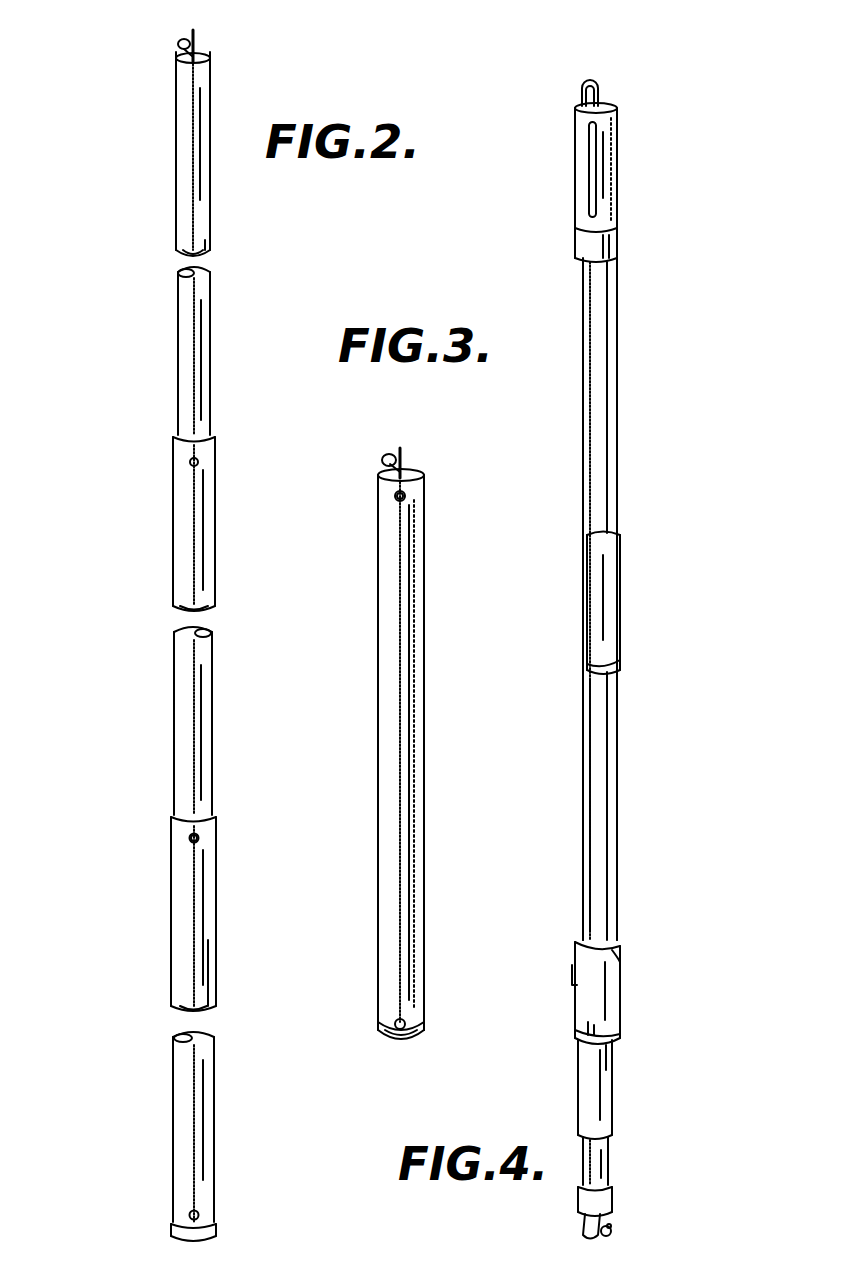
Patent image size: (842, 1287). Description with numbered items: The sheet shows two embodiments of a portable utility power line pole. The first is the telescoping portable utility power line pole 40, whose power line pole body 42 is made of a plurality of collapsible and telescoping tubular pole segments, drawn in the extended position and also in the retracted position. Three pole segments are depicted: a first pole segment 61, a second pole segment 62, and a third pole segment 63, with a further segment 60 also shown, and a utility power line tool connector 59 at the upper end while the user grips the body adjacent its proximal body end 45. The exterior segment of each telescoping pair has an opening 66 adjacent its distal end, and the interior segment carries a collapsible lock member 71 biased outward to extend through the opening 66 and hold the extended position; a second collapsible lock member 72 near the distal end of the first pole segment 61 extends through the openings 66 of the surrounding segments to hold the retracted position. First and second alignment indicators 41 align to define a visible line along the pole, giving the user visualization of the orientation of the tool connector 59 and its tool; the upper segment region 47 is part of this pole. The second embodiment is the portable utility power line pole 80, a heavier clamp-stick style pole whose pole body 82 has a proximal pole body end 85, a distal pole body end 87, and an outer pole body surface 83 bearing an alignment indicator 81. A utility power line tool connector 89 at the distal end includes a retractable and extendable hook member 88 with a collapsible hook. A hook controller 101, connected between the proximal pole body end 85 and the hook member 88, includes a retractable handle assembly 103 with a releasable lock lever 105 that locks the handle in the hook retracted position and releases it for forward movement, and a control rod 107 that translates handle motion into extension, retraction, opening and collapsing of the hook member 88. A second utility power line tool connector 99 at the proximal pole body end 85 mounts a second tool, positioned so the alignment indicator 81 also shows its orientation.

In FIG. 2, the portable utility power line pole 40 is at (105, 640).
In FIG. 3, the portable utility power line pole 40 is at (366, 745).
In FIG. 2, the alignment indicator 41 is at (190, 915).
In FIG. 2, the power line pole body 42 is at (191, 819).
In FIG. 2, the proximal body end 45 is at (232, 1168).
In FIG. 3, the proximal body end 45 is at (430, 1000).
In FIG. 2, the top pole section 47 is at (158, 158).
In FIG. 3, the top pole section 47 is at (434, 566).
In FIG. 2, the utility power line tool connector 59 is at (200, 50).
In FIG. 3, the utility power line tool connector 59 is at (408, 462).
In FIG. 2, the second pole section 60 is at (194, 439).
In FIG. 2, the first pole segment 61 is at (210, 240).
In FIG. 2, the second pole segment 62 is at (212, 664).
In FIG. 2, the third pole segment 63 is at (212, 972).
In FIG. 2, the opening 66 is at (189, 838).
In FIG. 3, the opening 66 is at (404, 498).
In FIG. 2, the collapsible lock member 71 is at (200, 838).
In FIG. 3, the collapsible lock member 71 is at (394, 1024).
In FIG. 3, the second collapsible lock member 72 is at (395, 498).
In FIG. 4, the portable utility power line pole 80 is at (646, 637).
In FIG. 4, the alignment indicator 81 is at (596, 801).
In FIG. 4, the pole body 82 is at (632, 727).
In FIG. 4, the outer pole body surface 83 is at (597, 813).
In FIG. 4, the proximal pole body end 85 is at (628, 1053).
In FIG. 4, the distal pool body end 87 is at (634, 190).
In FIG. 4, the retractable and extendable hook member 88 is at (612, 103).
In FIG. 4, the utility power line tool connector 89 is at (638, 73).
In FIG. 4, the second utility power line tool connector 99 is at (628, 1226).
In FIG. 4, the hook controller 101 is at (632, 970).
In FIG. 4, the retractable handle assembly 103 is at (577, 1008).
In FIG. 4, the releasable lock lever 105 is at (571, 968).
In FIG. 4, the control rod 107 is at (610, 887).